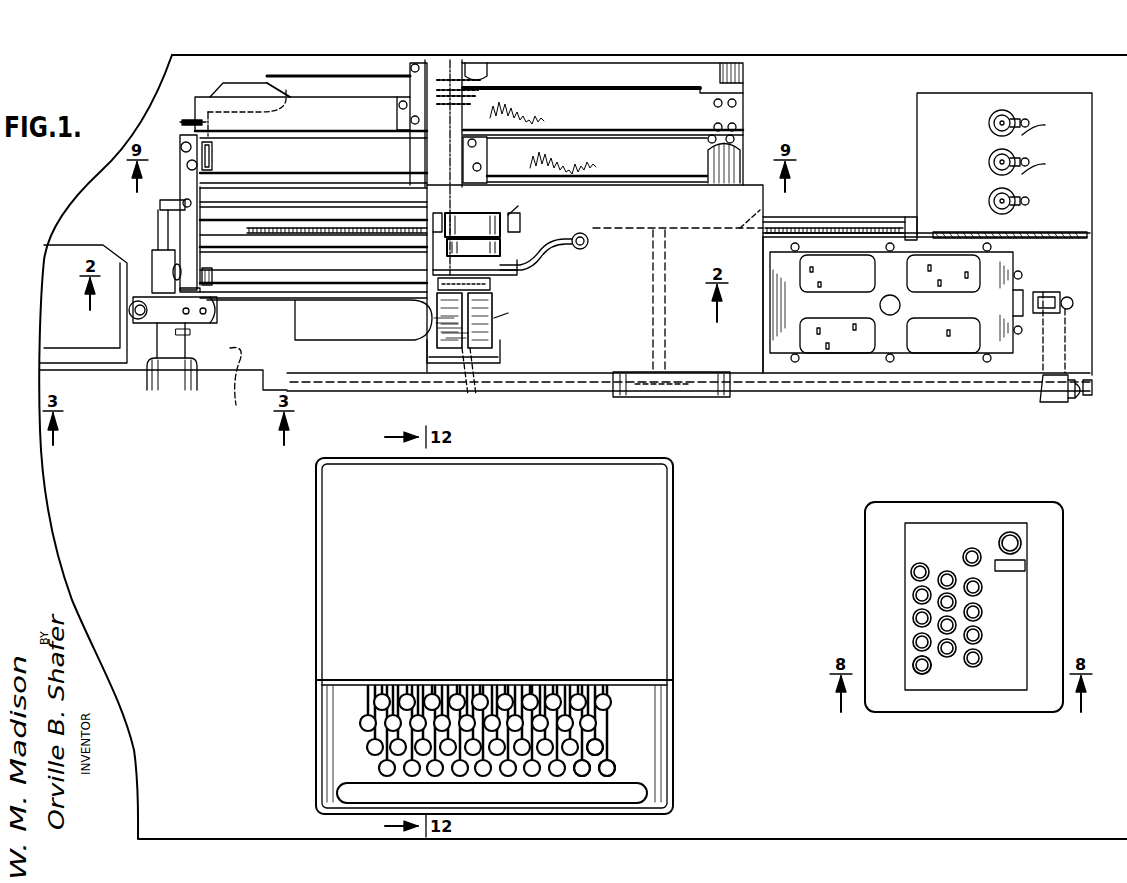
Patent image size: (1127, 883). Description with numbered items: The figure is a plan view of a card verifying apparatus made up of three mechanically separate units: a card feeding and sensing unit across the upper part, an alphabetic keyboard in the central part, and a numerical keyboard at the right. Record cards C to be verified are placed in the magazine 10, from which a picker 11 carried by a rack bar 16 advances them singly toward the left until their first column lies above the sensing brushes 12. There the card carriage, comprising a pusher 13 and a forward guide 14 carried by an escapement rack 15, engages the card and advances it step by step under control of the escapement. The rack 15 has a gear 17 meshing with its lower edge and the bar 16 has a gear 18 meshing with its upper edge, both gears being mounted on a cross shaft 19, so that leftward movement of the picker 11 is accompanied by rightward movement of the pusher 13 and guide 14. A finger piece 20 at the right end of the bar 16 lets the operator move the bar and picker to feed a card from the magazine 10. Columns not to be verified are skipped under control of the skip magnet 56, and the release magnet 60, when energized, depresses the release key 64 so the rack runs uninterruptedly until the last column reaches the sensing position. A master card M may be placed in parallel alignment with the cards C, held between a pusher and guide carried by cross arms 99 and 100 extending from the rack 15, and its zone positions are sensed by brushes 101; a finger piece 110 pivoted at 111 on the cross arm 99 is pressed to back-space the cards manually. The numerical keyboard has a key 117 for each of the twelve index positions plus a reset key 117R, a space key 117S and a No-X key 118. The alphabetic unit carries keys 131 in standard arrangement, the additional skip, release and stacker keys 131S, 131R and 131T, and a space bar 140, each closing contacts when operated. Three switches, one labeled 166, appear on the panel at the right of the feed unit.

The magazine 10 is at (870, 356).
The picker 11 is at (1030, 300).
The sensing brushes 12 is at (469, 381).
The pusher 13 is at (492, 286).
The forward guide 14 is at (208, 268).
The escapement rack 15 is at (770, 206).
The rack bar 16 is at (785, 393).
The gear 17 is at (682, 228).
The gear 18 is at (685, 380).
The cross shaft 19 is at (662, 288).
The finger piece 20 is at (1075, 402).
The skip magnet 56 is at (494, 337).
The release magnet 60 is at (462, 224).
The release key 64 is at (590, 242).
The cross arm 99 is at (489, 156).
The cross arm 100 is at (198, 180).
The brushes 101 is at (490, 82).
The finger piece 110 is at (175, 272).
The pivot 111 is at (172, 203).
The key 117 is at (973, 667).
The reset key 117R is at (975, 548).
The space key 117S is at (918, 675).
The No-X key 118 is at (1022, 545).
The alphabetic keys 131 is at (525, 690).
The skip key 131S is at (605, 750).
The stacker key 131T is at (616, 770).
The release key 131R is at (580, 776).
The space bar 140 is at (498, 800).
The auto eject switch 166 is at (1022, 213).
The master card M is at (258, 86).
The record cards C is at (232, 385).